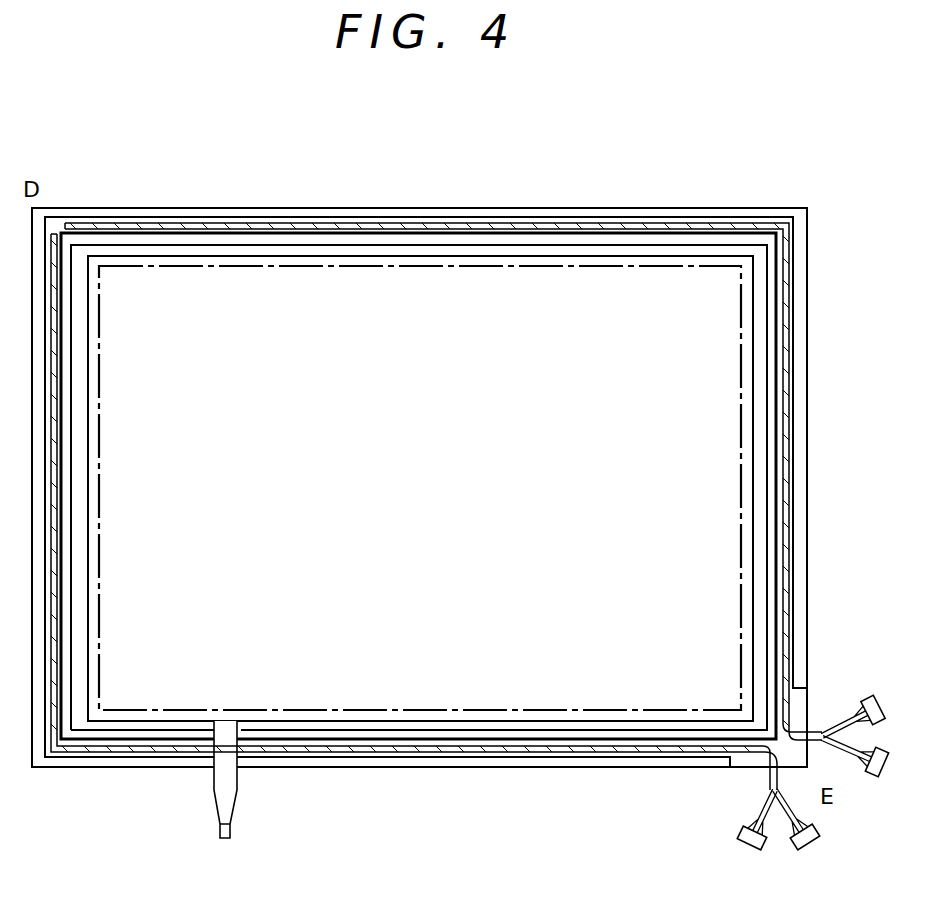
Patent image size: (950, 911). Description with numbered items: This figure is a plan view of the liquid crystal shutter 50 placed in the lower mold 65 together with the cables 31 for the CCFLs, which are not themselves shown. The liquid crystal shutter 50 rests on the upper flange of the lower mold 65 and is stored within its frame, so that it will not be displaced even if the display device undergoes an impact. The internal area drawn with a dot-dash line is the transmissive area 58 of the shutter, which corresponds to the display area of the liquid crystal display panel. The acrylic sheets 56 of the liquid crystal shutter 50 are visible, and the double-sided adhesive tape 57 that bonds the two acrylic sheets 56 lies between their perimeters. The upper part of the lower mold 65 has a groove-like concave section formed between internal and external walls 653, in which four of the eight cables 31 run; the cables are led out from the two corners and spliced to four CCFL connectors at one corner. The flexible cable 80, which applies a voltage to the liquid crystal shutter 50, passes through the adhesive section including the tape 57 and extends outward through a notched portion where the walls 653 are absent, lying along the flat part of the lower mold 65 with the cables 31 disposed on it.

The lower mold 65 is at (150, 206).
The walls 653 is at (273, 238).
The cables for the CCFLs 31 is at (354, 222).
The liquid crystal shutter 50 is at (448, 313).
The transmissive area 58 is at (520, 290).
The double-sided adhesive tape 57 is at (582, 258).
The acrylic sheets 56 is at (653, 252).
The flexible cable 80 is at (214, 813).